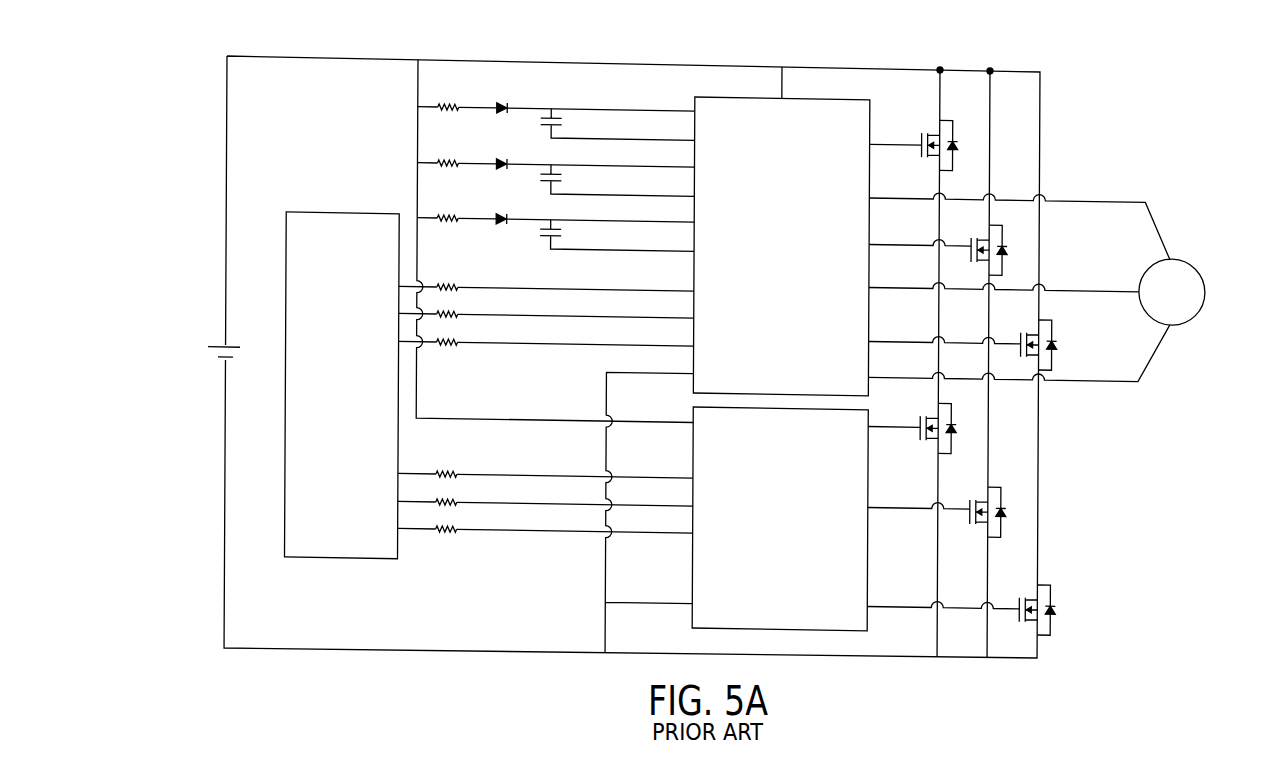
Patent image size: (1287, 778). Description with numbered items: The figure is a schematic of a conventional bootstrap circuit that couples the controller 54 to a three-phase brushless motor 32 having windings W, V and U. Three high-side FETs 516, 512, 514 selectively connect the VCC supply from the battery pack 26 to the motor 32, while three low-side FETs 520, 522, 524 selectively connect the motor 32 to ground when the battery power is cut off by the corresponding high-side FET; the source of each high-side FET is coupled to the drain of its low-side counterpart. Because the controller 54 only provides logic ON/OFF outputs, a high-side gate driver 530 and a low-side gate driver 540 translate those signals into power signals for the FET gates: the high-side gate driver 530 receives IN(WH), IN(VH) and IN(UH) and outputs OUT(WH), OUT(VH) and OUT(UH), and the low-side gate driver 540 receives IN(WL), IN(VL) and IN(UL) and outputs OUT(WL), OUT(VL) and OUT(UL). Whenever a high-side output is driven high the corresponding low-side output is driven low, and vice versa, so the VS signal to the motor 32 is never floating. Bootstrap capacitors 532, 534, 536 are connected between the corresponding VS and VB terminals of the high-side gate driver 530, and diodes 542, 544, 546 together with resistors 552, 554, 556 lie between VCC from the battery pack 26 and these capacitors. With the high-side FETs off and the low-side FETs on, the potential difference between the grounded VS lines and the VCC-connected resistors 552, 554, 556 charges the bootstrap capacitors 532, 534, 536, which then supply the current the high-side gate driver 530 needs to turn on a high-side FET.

The battery pack 26 is at (209, 355).
The motor 32 is at (1208, 277).
The controller 54 is at (352, 404).
The high-side FET 512 is at (983, 220).
The high-side FET 514 is at (1058, 342).
The high-side transistor (W phase) 516 is at (935, 119).
The low-side FET 520 is at (930, 402).
The low-side FET 522 is at (993, 473).
The low-side FET 524 is at (1042, 570).
The high-side gate driver 530 is at (796, 270).
The low-side gate driver 540 is at (794, 540).
The bootstrap capacitor 532 is at (556, 110).
The bootstrap capacitor 534 is at (545, 178).
The bootstrap capacitor 536 is at (545, 235).
The bootstrap diode 542 is at (499, 98).
The diode 544 is at (494, 154).
The diode 546 is at (494, 209).
The resistor 552 is at (437, 101).
The resistor 554 is at (437, 157).
The resistor 556 is at (437, 212).